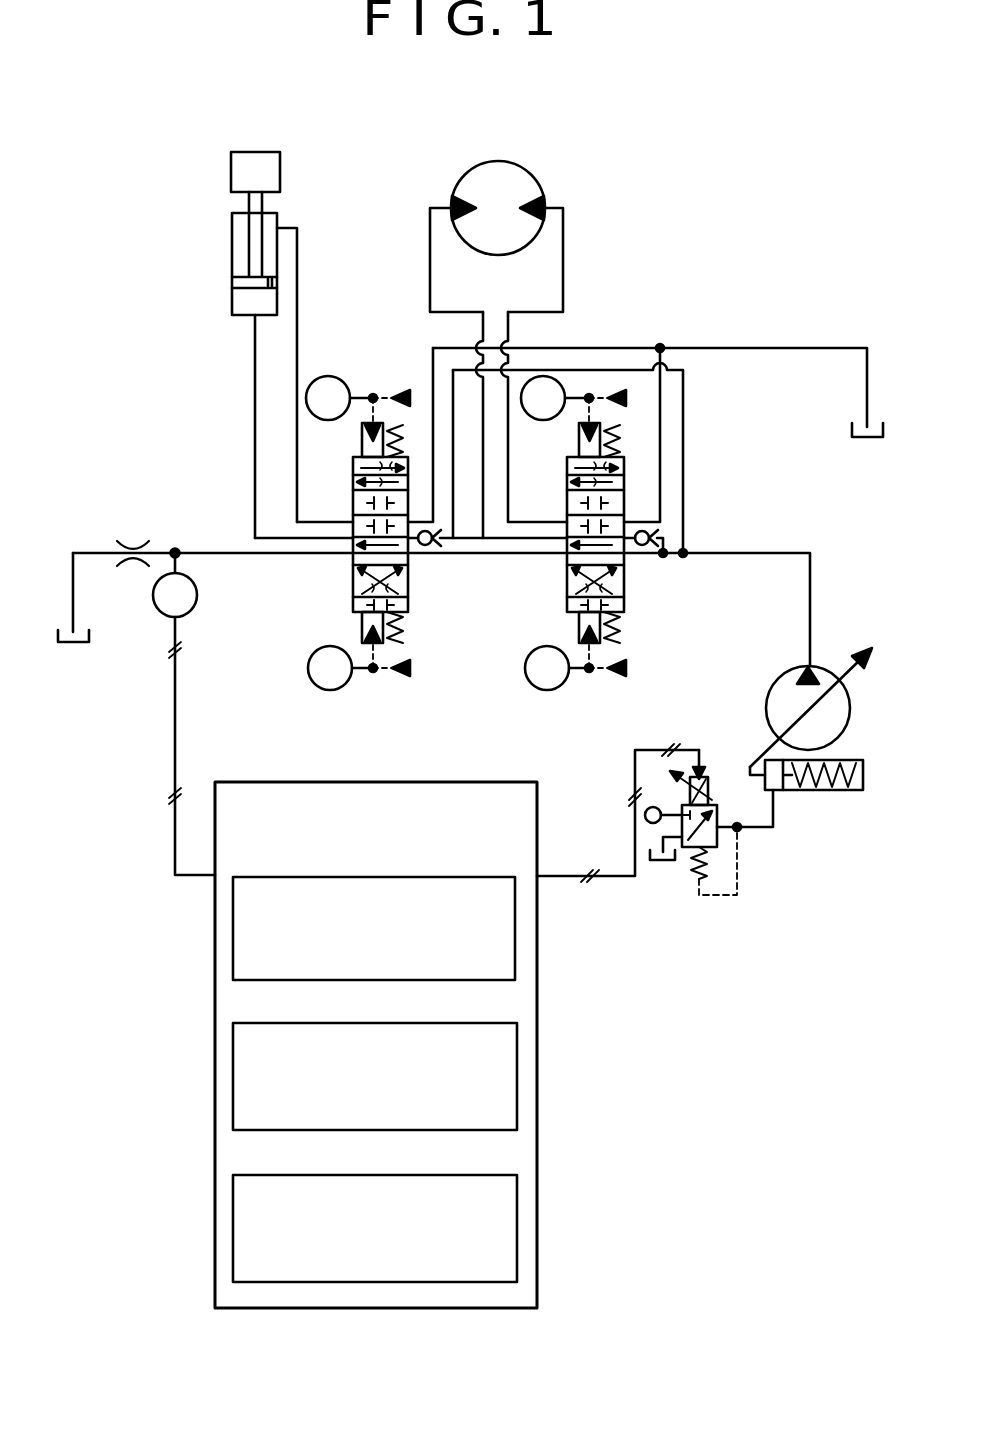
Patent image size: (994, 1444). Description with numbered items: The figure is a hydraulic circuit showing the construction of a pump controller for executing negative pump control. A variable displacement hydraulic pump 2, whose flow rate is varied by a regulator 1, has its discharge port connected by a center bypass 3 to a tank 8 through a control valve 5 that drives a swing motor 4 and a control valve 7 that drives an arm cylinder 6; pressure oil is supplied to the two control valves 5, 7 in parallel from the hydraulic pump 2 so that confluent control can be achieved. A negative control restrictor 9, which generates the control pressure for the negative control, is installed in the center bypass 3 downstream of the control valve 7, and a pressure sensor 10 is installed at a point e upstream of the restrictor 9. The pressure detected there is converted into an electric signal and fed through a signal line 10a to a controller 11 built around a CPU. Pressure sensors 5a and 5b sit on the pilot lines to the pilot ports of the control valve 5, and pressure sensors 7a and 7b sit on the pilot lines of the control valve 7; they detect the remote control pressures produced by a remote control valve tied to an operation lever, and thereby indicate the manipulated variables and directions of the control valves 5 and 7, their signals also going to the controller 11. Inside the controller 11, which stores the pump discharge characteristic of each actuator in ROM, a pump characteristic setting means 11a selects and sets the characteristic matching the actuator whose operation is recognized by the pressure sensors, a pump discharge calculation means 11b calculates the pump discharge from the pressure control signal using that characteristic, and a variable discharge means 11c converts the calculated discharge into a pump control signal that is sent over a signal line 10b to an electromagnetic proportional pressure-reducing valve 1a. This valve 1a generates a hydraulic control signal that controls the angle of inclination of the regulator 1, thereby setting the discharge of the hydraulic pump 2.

The regulator 1 is at (814, 808).
The electromagnetic proportional pressure-reducing valve 1a is at (706, 912).
The variable displacement hydraulic pump 2 is at (851, 700).
The center bypass 3 is at (441, 609).
The swing motor 4 is at (535, 176).
The control valve 5 is at (642, 583).
The pressure sensor 5a is at (560, 376).
The pressure sensor 5b is at (550, 690).
The arm cylinder 6 is at (232, 248).
The control valve 7 is at (340, 576).
The pressure sensor 7a is at (328, 376).
The pressure sensor 7b is at (336, 690).
The tank 8 is at (68, 648).
The negative control restrictor 9 is at (133, 548).
The pressure sensor 10 is at (191, 607).
The signal line 10a is at (170, 855).
The signal line 10b is at (562, 872).
The controller 11 is at (376, 1010).
The pump characteristic setting means 11a is at (470, 877).
The pump discharge calculation means 11b is at (470, 1022).
The variable discharge means 11c is at (470, 1175).
The point e is at (183, 542).